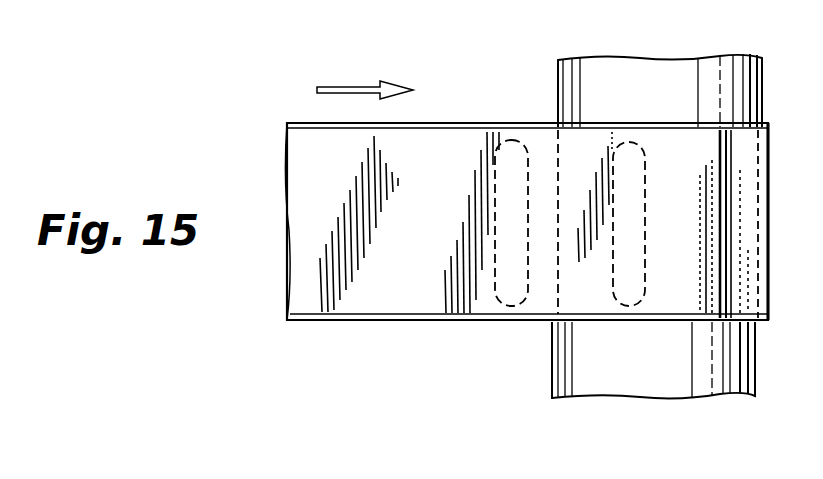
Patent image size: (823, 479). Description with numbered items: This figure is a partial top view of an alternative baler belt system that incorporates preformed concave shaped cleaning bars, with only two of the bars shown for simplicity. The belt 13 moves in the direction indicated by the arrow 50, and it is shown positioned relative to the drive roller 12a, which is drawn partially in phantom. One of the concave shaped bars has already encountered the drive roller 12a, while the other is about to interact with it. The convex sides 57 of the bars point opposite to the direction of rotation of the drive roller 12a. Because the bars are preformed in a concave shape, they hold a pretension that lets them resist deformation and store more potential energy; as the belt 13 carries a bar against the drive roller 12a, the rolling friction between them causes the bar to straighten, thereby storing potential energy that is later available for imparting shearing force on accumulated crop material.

The arrow 50 is at (340, 87).
The convex sides 57 is at (495, 183).
The drive roller 12a is at (577, 72).
The belt 13 is at (393, 314).